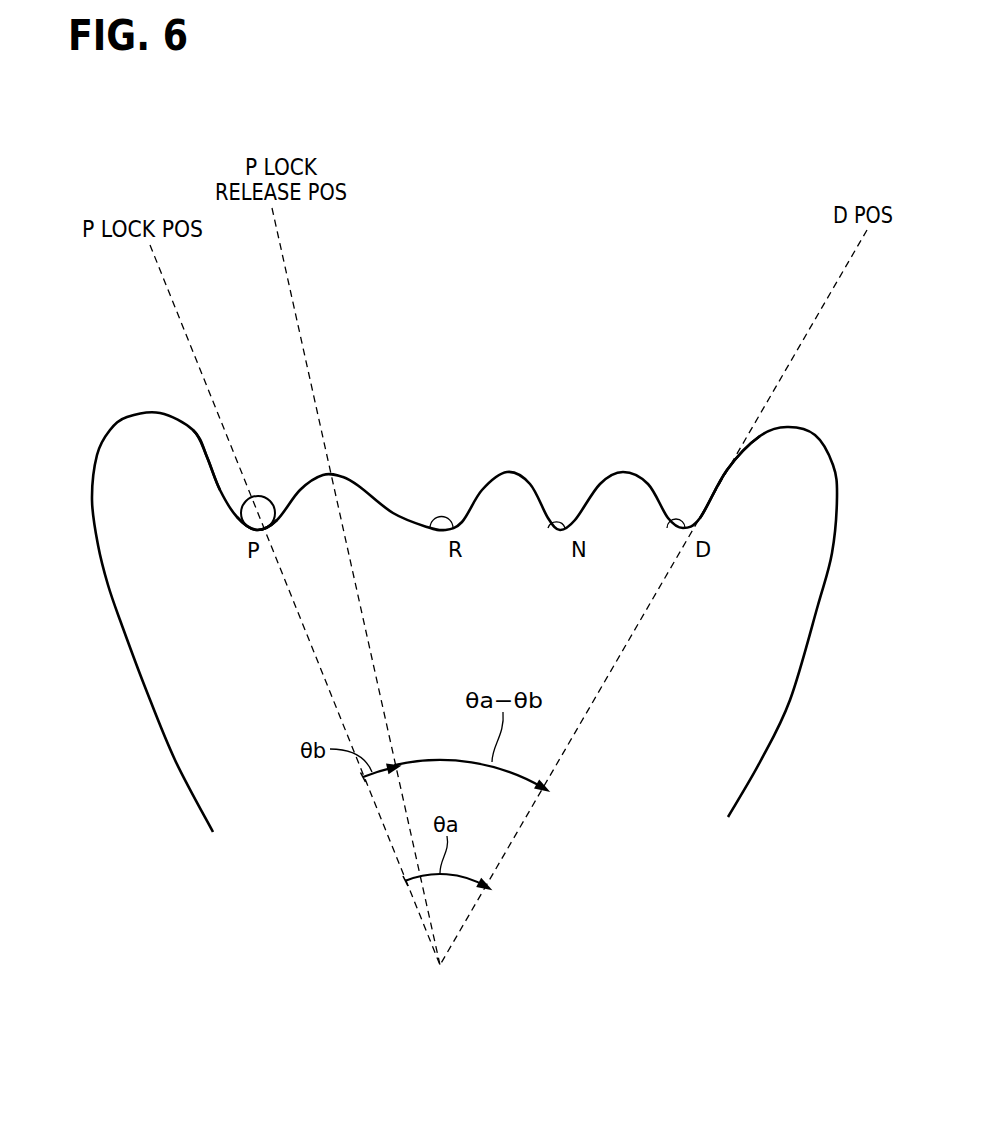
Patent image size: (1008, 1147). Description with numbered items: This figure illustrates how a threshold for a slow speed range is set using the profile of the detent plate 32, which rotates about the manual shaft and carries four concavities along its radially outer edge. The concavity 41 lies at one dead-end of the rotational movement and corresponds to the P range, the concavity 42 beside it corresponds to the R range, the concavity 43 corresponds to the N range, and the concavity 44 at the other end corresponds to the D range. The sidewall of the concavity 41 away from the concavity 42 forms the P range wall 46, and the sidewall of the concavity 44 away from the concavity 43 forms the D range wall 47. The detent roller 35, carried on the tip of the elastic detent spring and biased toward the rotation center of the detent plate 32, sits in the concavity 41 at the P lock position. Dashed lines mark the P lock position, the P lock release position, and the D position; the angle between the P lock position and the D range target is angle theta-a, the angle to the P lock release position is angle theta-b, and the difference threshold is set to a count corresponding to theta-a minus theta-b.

The detent plate 32 is at (167, 687).
The detent roller 35 is at (255, 495).
The concavity 41 is at (267, 518).
The concavity 42 is at (430, 527).
The concavity 43 is at (548, 527).
The concavity 44 is at (668, 518).
The P range wall 46 is at (212, 468).
The D range wall 47 is at (727, 470).